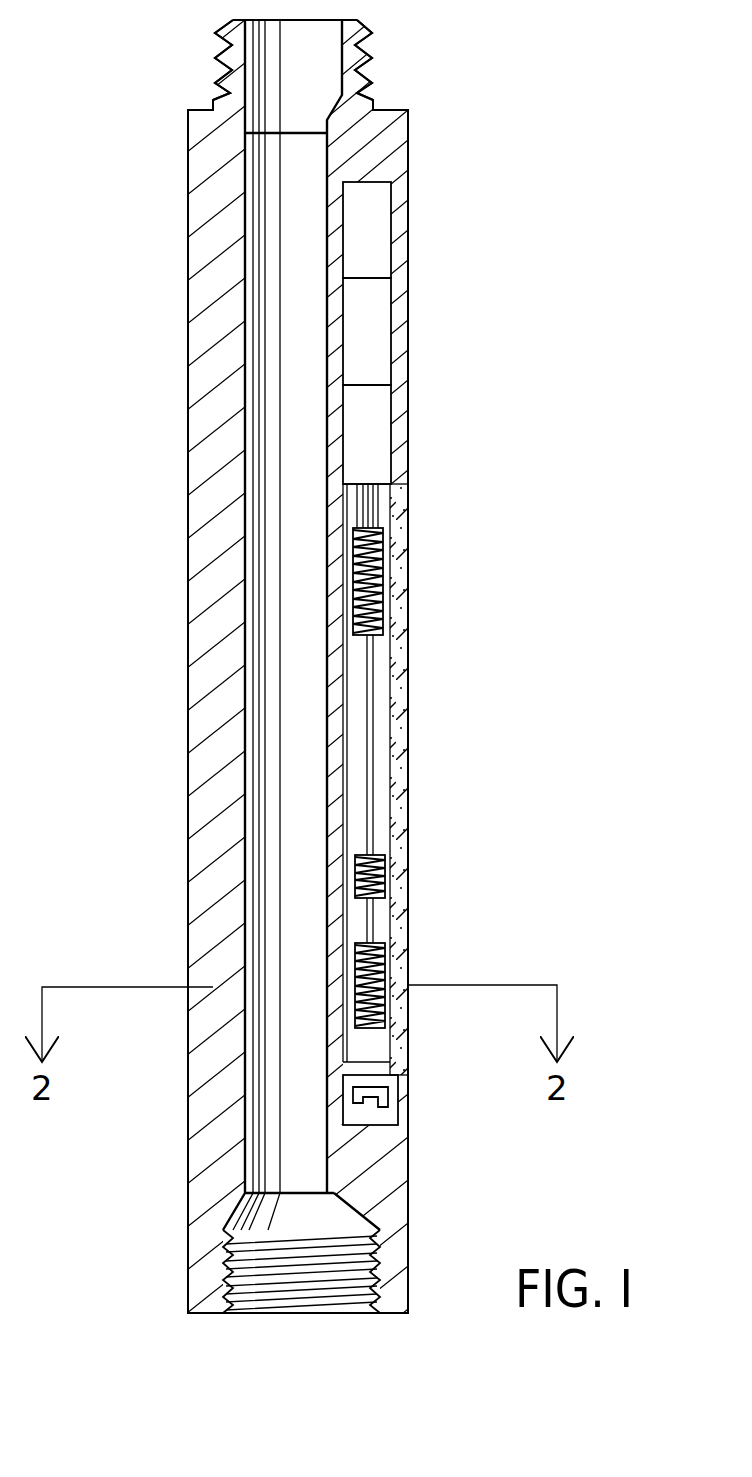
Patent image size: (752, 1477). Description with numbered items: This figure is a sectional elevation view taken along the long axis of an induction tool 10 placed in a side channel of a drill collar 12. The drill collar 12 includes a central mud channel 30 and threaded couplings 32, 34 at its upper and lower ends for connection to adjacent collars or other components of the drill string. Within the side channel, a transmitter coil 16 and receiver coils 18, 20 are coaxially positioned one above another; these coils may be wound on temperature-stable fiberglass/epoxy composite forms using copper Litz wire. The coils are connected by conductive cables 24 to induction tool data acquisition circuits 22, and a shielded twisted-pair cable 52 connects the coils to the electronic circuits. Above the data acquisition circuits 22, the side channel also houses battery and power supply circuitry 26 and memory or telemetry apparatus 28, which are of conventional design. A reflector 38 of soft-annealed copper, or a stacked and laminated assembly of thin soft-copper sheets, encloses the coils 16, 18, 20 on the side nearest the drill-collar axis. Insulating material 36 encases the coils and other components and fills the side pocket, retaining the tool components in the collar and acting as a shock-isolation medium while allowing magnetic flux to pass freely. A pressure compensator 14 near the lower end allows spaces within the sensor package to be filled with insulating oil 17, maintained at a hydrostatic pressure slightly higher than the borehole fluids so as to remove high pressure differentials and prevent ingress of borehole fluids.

The induction tool 10 is at (514, 652).
The drill collar 12 is at (205, 438).
The pressure compensator 14 is at (368, 1093).
The transmitter coil 16 is at (370, 572).
The insulating oil 17 is at (380, 768).
The receiver coil 18 is at (372, 878).
The receiver coil 20 is at (375, 962).
The induction tool data acquisition circuits 22 is at (372, 440).
The conductive cables 24 is at (378, 506).
The battery and power supply circuitry 26 is at (372, 218).
The memory or telemetry apparatus 28 is at (378, 330).
The mud channel 30 is at (295, 799).
The threaded coupling 32 is at (370, 52).
The threaded coupling 34 is at (230, 1267).
The insulating material 36 is at (400, 1025).
The reflector 38 is at (340, 694).
The shielded twisted-pair cable 52 is at (372, 910).